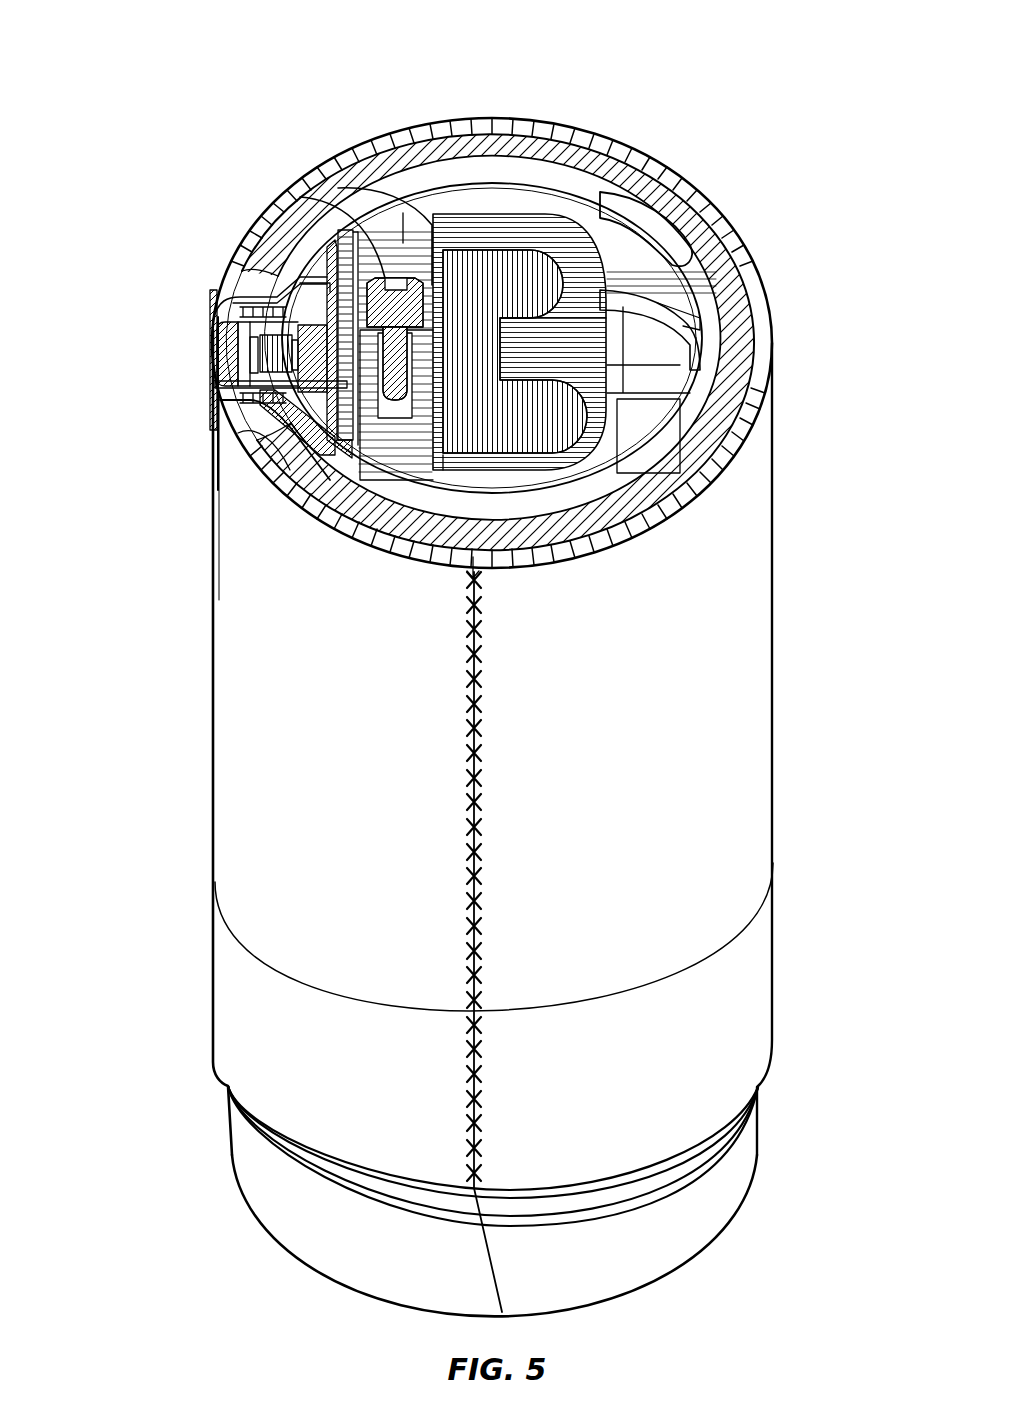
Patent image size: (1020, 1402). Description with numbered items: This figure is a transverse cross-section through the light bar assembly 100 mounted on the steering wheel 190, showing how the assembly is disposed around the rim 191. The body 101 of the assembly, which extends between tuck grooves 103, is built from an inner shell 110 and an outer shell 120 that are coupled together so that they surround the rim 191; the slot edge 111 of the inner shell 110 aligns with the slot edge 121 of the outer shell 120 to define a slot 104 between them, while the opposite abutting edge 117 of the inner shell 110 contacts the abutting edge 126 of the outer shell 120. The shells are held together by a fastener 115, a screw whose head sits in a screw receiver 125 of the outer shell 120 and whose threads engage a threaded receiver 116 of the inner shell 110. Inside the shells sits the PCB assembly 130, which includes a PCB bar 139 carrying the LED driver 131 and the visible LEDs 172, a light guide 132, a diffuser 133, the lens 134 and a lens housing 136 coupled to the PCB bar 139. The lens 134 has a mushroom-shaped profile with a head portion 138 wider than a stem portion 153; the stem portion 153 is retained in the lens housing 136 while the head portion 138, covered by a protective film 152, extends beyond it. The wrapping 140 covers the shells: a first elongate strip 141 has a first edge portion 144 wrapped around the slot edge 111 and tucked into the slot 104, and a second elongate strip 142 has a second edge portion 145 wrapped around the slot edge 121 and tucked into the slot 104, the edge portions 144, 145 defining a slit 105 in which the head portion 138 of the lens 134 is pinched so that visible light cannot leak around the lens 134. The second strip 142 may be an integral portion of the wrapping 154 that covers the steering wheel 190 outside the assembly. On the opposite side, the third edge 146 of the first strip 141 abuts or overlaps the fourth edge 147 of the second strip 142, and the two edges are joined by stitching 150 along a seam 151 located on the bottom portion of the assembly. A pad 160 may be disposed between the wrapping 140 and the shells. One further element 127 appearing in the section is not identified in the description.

The light bar assembly 100 is at (754, 124).
The body 101 is at (467, 163).
The tuck grooves 103 is at (760, 1118).
The slot 104 is at (258, 300).
The slit 105 is at (232, 322).
The inner shell 110 is at (377, 480).
The slot edge 111 is at (305, 445).
The fastener 115 is at (493, 405).
The threaded receiver 116 is at (397, 360).
The abutting edge 117 is at (722, 345).
The outer shell 120 is at (500, 200).
The slot edge 121 is at (240, 308).
The screw receiver 125 is at (432, 222).
The abutting edge 126 is at (774, 330).
The mounting plate 127 is at (343, 283).
The PCB assembly 130 is at (140, 368).
The LED driver 131 is at (403, 243).
The light guide 132 is at (285, 290).
The diffuser 133 is at (272, 357).
The lens 134 is at (235, 360).
The lens housing 136 is at (300, 480).
The head portion 138 is at (225, 372).
The PCB bar 139 is at (322, 240).
The wrapping 140 is at (350, 200).
The first elongate strip 141 is at (268, 440).
The second elongate strip 142 is at (613, 147).
The first edge portion 144 is at (248, 405).
The second edge portion 145 is at (262, 340).
The third edge 146 is at (455, 557).
The fourth edge 147 is at (418, 385).
The stitching 150 is at (478, 782).
The seam 151 is at (478, 872).
The film 152 is at (228, 350).
The stem portion 153 is at (240, 395).
The wrapping 154 is at (284, 1215).
The pad 160 is at (652, 200).
The visible LEDs 172 is at (300, 265).
The steering wheel 190 is at (757, 1200).
The rim 191 is at (520, 263).